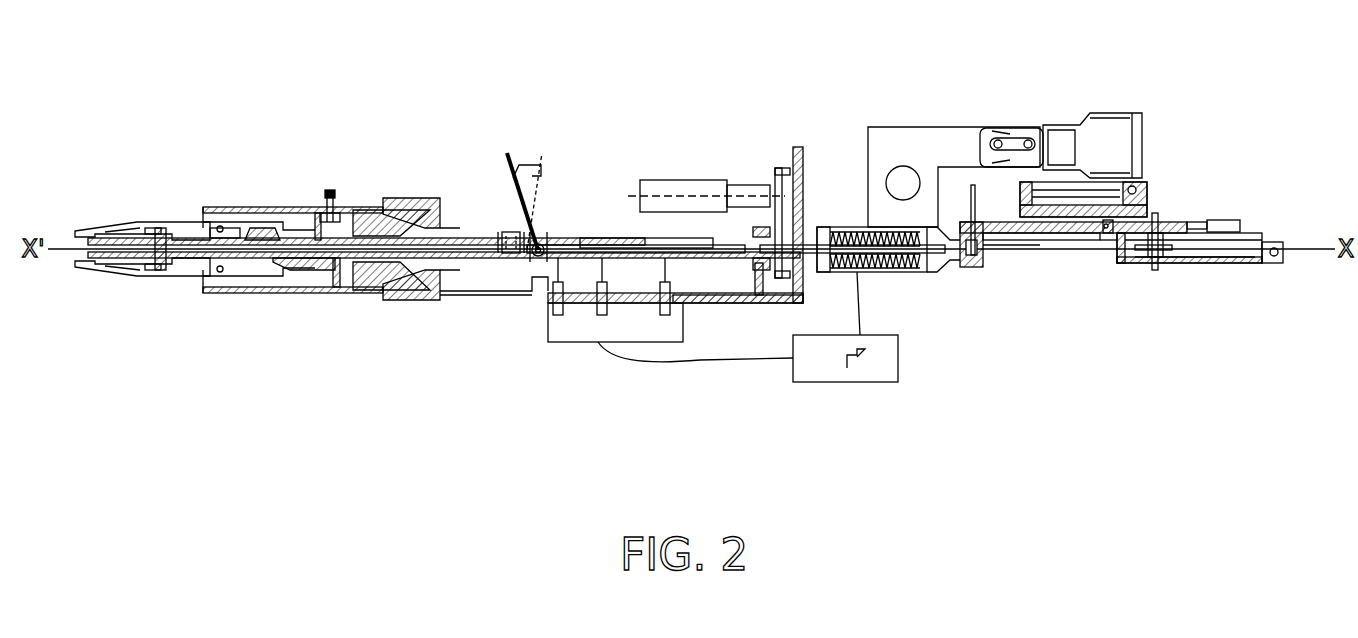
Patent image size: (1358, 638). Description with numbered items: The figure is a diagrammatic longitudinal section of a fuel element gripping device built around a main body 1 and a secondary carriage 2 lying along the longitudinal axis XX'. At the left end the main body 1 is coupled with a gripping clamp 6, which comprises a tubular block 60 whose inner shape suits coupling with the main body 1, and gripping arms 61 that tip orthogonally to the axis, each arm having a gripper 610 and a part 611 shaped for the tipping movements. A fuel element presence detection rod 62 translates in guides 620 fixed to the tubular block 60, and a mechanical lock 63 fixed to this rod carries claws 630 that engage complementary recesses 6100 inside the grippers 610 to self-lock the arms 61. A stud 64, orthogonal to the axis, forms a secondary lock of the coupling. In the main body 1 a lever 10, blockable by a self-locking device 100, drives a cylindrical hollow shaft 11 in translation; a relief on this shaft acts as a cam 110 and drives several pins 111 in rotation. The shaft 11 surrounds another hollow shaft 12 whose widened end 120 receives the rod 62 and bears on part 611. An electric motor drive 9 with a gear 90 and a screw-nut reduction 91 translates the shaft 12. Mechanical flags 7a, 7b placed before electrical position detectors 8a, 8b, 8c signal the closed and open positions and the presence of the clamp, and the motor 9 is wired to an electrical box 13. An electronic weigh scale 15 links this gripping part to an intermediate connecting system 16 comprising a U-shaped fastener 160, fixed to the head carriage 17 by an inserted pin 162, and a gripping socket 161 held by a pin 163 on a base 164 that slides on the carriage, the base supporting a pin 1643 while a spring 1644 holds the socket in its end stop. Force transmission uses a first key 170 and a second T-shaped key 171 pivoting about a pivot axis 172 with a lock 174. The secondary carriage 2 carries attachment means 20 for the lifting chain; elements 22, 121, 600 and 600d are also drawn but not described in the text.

The main body 1 is at (340, 236).
The secondary carriage 2 is at (1222, 265).
The gripping clamp 6 is at (117, 266).
The mechanical flag 7a is at (600, 284).
The mechanical flag 7b is at (545, 292).
The electrical position detector 8a is at (666, 315).
The electrical position detector 8b is at (601, 315).
The detector 8c is at (556, 315).
The electric motor drive 9 is at (650, 180).
The lever 10 is at (528, 150).
The cylindrical hollow shaft 11 is at (505, 232).
The hollow shaft 12 is at (337, 287).
The electrical box 13 is at (882, 382).
The electronic weigh scale 15 is at (826, 132).
The intermediate connecting system 16 is at (895, 275).
The head carriage 17 is at (1058, 240).
The attachment means 20 is at (1272, 265).
The pin 22 is at (1158, 230).
The tubular block 60 is at (226, 209).
The gripping arms 61 is at (118, 272).
The detection rod 62 is at (97, 231).
The mechanical lock 63 is at (167, 270).
The stud 64 is at (326, 190).
The gear 90 is at (832, 335).
The screw-nut type reduction gear 91 is at (758, 280).
The self-locking device 100 is at (545, 170).
The cam 110 is at (455, 236).
The pins 111 is at (410, 208).
The widened end 120 is at (292, 270).
The stop 121 is at (1163, 265).
The fastener 160 is at (988, 270).
The gripping socket 161 is at (1065, 128).
The inserted pin 162 is at (970, 268).
The pin 163 is at (1138, 182).
The base 164 is at (1020, 210).
The first key 170 is at (1110, 243).
The second T-shaped key 171 is at (1190, 232).
The pivot axis 172 is at (1150, 260).
The lock system 174 is at (1242, 226).
The sleeve 600 is at (375, 222).
The end piece 600d is at (430, 198).
The gripper 610 is at (130, 226).
The arm part 611 is at (272, 222).
The guides 620 is at (228, 287).
The claws 630 is at (157, 272).
The pin 1643 is at (1040, 197).
The spring 1644 is at (1042, 240).
The recesses 6100 is at (150, 228).